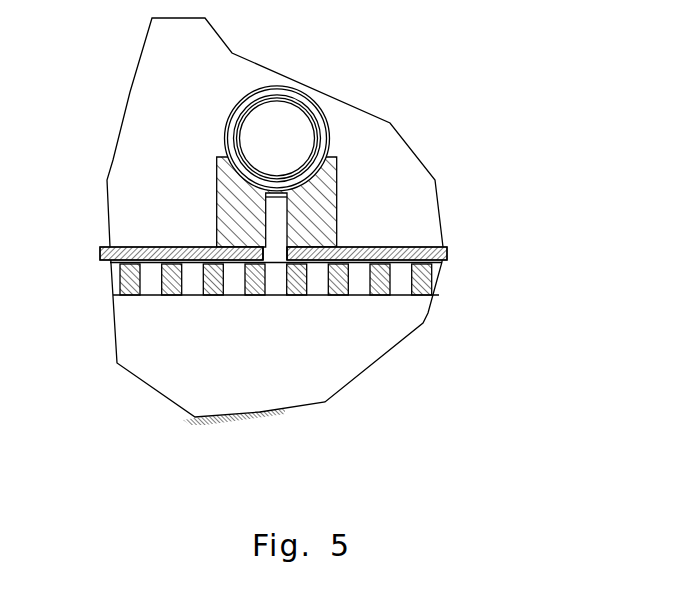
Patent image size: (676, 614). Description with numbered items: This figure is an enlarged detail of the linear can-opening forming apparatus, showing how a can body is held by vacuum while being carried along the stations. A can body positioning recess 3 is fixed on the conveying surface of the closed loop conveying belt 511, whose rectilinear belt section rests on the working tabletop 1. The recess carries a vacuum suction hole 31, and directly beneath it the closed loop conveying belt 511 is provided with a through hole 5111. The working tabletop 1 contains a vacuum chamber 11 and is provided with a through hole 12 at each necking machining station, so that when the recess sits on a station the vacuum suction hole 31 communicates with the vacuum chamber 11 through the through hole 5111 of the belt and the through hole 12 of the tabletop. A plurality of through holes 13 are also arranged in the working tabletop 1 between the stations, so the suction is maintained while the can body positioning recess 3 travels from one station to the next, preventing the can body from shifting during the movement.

The working tabletop 1 is at (132, 291).
The vacuum chamber 11 is at (290, 362).
The through hole 12 is at (278, 283).
The through hole 13 is at (393, 275).
The can body positioning recess 3 is at (330, 202).
The vacuum suction hole 31 is at (277, 230).
The closed loop conveying belt 511 is at (432, 250).
The through hole 5111 is at (270, 252).